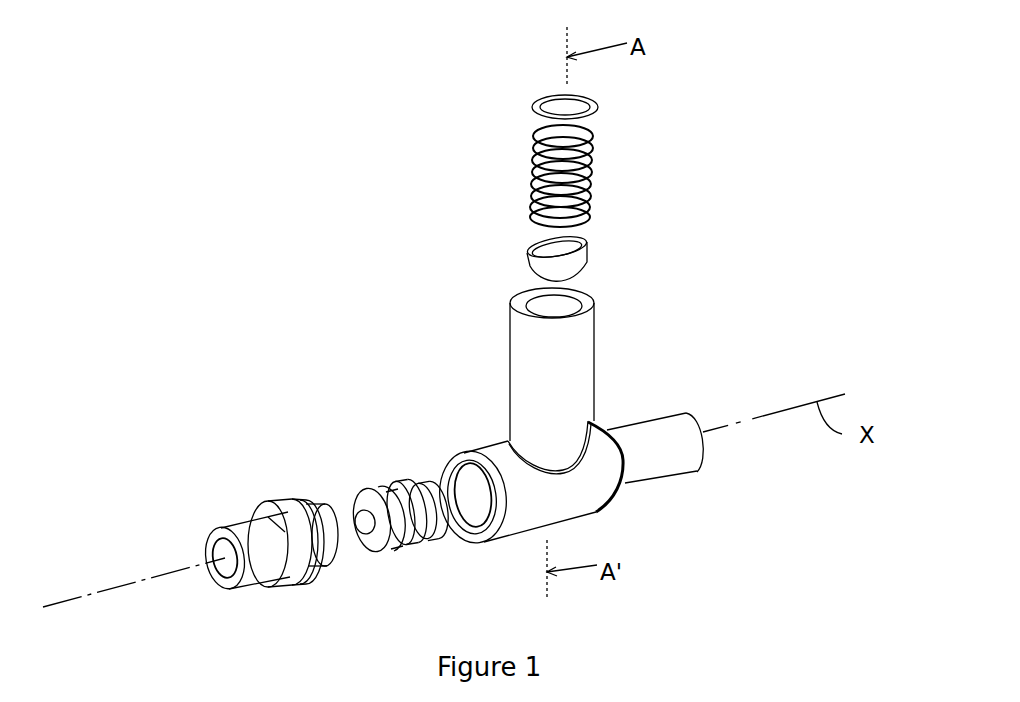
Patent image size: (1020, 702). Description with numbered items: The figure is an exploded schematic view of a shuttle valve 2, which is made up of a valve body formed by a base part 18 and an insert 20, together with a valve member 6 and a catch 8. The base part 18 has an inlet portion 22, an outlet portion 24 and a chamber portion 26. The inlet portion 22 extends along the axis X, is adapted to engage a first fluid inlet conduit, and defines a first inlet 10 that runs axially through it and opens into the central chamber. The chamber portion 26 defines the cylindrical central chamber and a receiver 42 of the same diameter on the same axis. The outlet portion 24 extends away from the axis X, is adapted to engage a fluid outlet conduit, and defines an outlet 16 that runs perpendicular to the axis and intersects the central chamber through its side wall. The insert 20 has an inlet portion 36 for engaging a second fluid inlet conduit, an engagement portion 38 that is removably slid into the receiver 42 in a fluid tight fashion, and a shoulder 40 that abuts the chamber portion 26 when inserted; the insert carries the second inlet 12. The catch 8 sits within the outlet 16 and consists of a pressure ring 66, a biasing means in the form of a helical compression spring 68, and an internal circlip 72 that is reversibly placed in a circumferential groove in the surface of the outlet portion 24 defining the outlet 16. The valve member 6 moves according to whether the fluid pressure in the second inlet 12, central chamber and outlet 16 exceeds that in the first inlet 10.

The shuttle valve 2 is at (183, 234).
The valve member 6 is at (390, 553).
The catch 8 is at (543, 176).
The first inlet 10 is at (707, 448).
The second inlet 12 is at (225, 562).
The outlet 16 is at (542, 305).
The base part 18 is at (606, 401).
The insert 20 is at (241, 551).
The inlet portion 22 is at (724, 471).
The outlet portion 24 is at (534, 343).
The chamber portion 26 is at (569, 456).
The inlet portion 36 is at (217, 558).
The engagement portion 38 is at (305, 498).
The shoulder 40 is at (265, 500).
The receiver 42 is at (468, 485).
The pressure ring 66 is at (567, 281).
The helical compression spring 68 is at (532, 167).
The circlip 72 is at (597, 98).